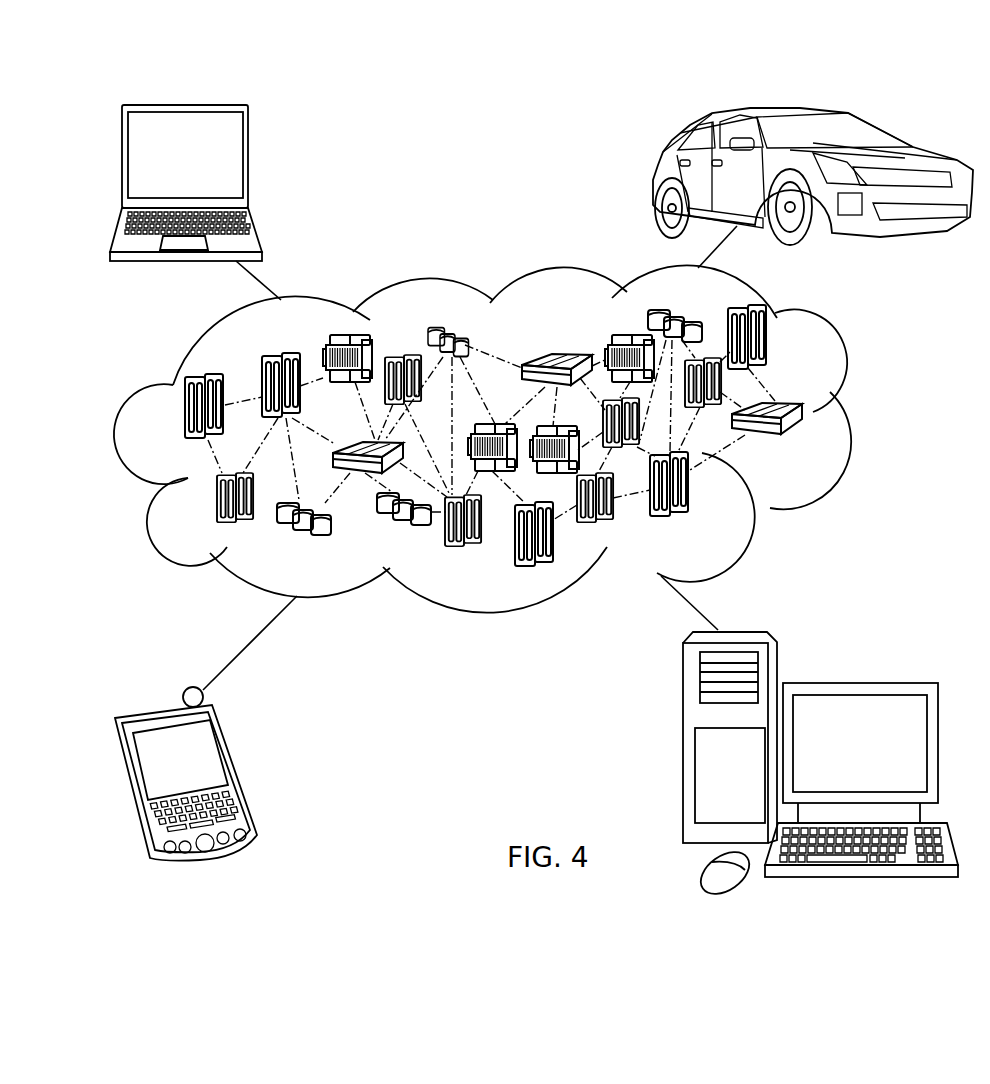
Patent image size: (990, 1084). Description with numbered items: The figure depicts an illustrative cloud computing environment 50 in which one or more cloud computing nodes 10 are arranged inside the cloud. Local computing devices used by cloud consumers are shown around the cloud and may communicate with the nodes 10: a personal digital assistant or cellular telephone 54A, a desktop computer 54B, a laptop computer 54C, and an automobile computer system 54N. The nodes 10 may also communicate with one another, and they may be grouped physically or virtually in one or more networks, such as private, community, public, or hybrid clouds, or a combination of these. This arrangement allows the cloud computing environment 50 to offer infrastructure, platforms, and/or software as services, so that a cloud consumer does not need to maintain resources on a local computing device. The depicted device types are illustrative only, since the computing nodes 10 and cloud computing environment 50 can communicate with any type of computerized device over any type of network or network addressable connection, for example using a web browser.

The cloud computing nodes 10 is at (542, 435).
The cloud computing environment 50 is at (852, 417).
The personal digital assistant or cellular telephone 54A is at (240, 773).
The desktop computer 54B is at (857, 682).
The laptop computer 54C is at (248, 163).
The automobile computer system 54N is at (656, 178).